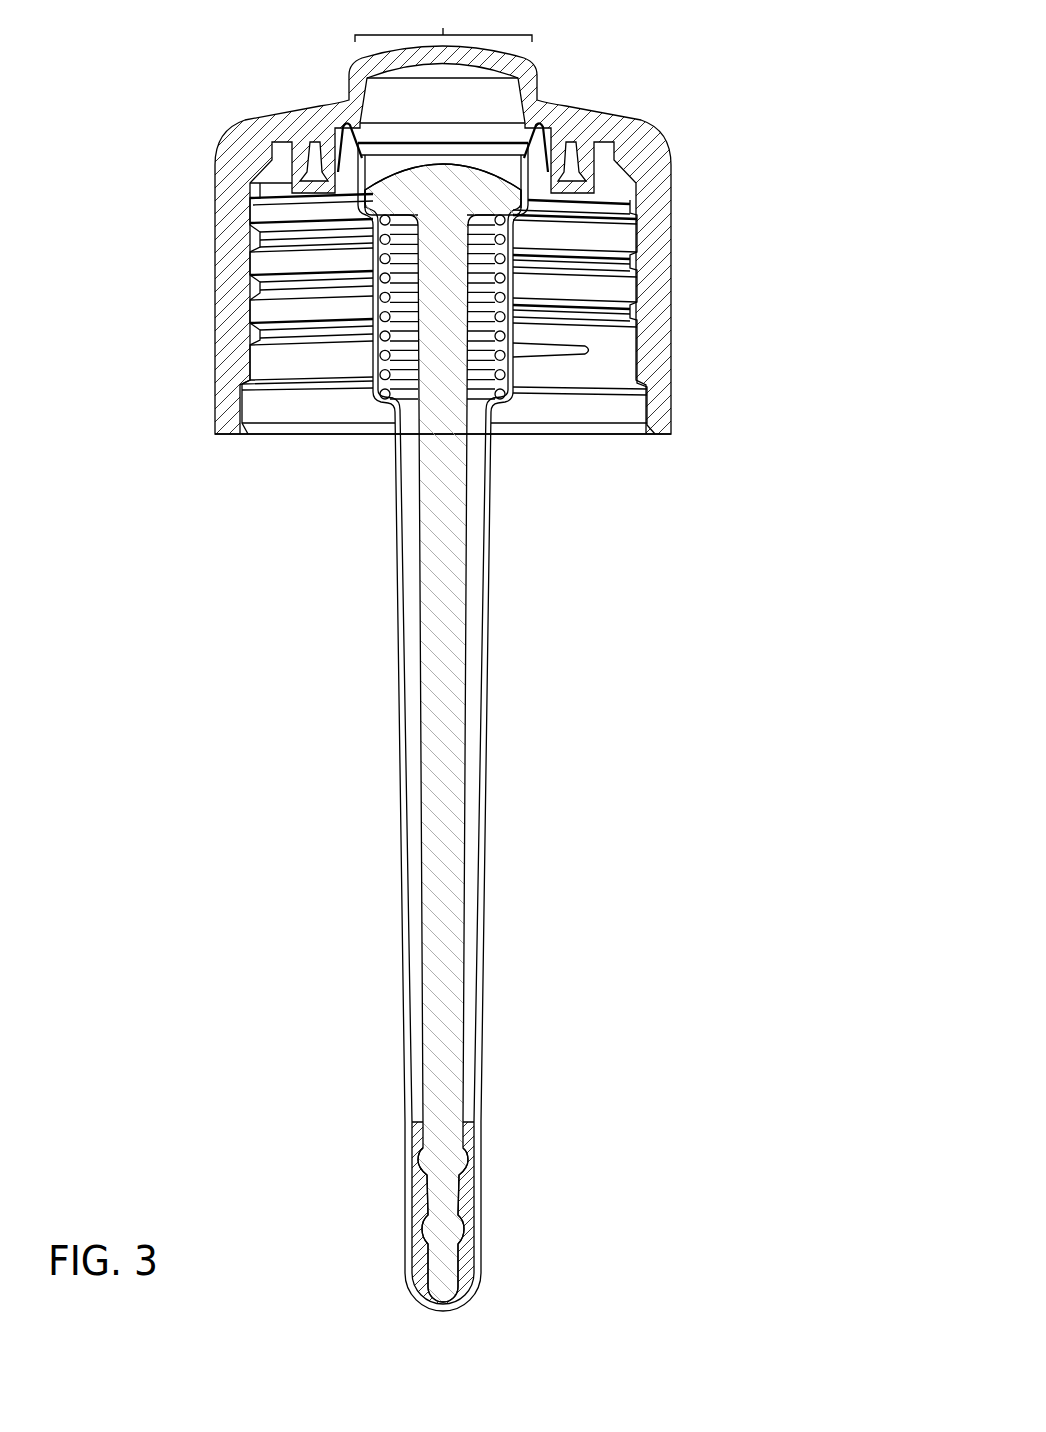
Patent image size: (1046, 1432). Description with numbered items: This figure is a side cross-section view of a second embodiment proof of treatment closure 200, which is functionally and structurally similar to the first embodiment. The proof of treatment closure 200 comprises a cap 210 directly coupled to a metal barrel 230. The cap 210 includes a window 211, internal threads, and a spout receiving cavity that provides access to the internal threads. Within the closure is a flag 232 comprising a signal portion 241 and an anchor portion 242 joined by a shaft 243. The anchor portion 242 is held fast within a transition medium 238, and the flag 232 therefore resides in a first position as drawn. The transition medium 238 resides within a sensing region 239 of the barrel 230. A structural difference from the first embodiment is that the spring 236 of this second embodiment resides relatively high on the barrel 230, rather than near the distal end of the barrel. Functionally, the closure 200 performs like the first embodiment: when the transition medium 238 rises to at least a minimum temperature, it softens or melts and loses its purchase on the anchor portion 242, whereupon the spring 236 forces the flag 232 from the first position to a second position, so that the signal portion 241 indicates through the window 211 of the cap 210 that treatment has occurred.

The proof of treatment closure 200 is at (717, 160).
The cap 210 is at (672, 288).
The window 211 is at (443, 28).
The metal barrel 230 is at (488, 683).
The flag 232 is at (478, 558).
The spring 236 is at (375, 395).
The transition medium 238 is at (472, 1163).
The sensing region 239 is at (384, 1122).
The signal portion 241 is at (440, 190).
The anchor portion 242 is at (443, 1227).
The shaft 243 is at (468, 802).